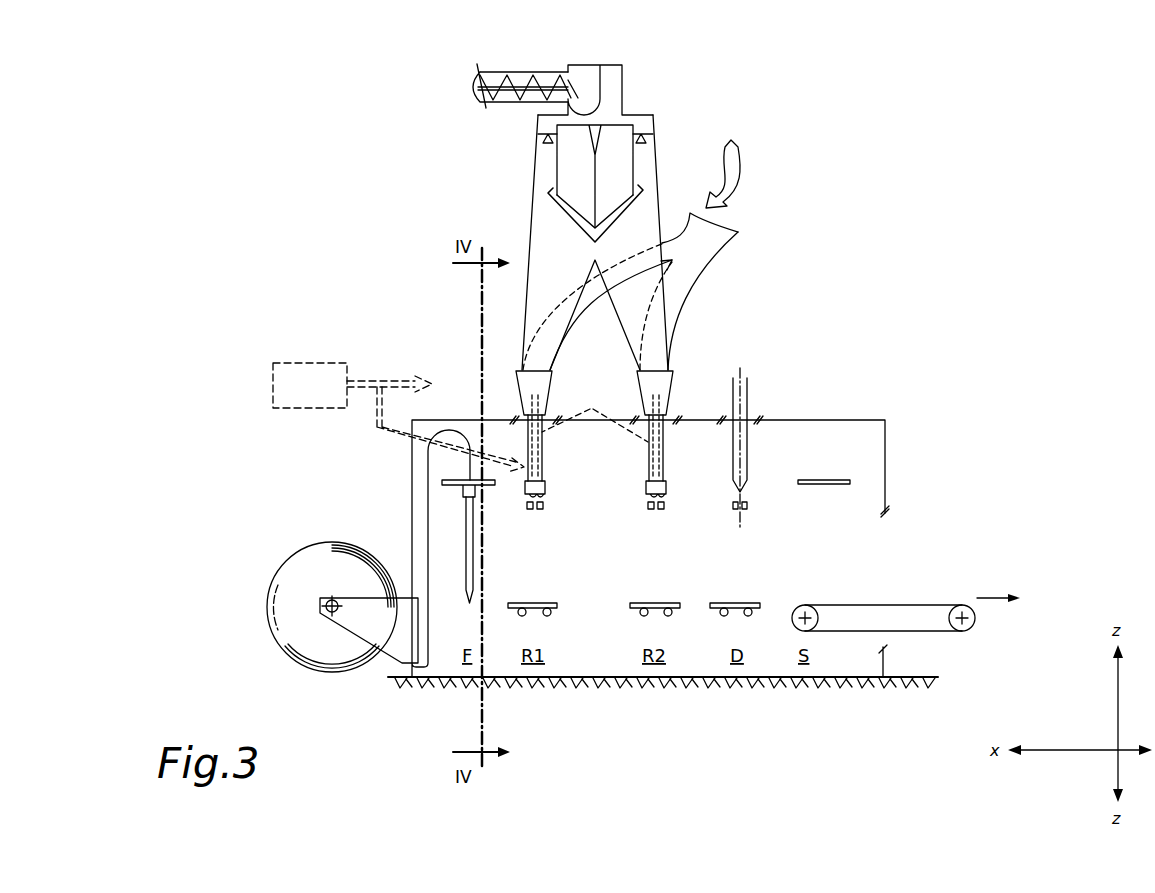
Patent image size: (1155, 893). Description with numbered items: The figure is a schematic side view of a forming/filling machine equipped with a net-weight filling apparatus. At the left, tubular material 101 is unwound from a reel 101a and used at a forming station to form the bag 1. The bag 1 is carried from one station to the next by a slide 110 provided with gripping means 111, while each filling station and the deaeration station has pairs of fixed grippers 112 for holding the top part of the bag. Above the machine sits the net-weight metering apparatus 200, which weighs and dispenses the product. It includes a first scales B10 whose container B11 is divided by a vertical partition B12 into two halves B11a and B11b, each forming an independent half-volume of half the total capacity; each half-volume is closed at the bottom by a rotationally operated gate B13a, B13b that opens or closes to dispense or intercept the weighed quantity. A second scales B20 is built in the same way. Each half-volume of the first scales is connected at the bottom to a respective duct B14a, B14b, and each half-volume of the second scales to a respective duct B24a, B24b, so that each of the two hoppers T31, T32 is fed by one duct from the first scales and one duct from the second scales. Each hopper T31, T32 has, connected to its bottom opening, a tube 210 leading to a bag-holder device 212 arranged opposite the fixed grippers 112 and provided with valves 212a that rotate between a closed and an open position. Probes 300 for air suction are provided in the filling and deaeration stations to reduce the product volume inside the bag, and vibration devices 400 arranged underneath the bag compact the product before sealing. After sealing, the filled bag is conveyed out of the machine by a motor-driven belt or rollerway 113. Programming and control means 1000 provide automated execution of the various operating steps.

The first scales B10 is at (597, 209).
The container B11 is at (623, 127).
The half-volume B11a is at (575, 168).
The half-volume B11b is at (617, 163).
The vertical partition B12 is at (596, 188).
The gate B13a is at (540, 202).
The gate B13b is at (540, 202).
The duct B14a is at (547, 275).
The duct B14b is at (635, 298).
The second scales B20 is at (724, 255).
The duct B24a is at (590, 305).
The duct B24b is at (679, 268).
The hopper T31 is at (526, 380).
The hopper T32 is at (662, 380).
The net-weight metering apparatus 200 is at (461, 193).
The tube 210 is at (527, 450).
The bag-holder device 212 is at (542, 479).
The valves 212a is at (543, 491).
The fixed grippers 112 is at (542, 511).
The probes 300 is at (788, 390).
The programming and control means 1000 is at (398, 417).
The slide 110 is at (457, 479).
The gripping means 111 is at (455, 490).
The bag 1 is at (473, 533).
The tubular material 101 is at (380, 668).
The reel 101a is at (298, 582).
The vibration devices 400 is at (550, 600).
The motor-driven belt 113 is at (942, 630).